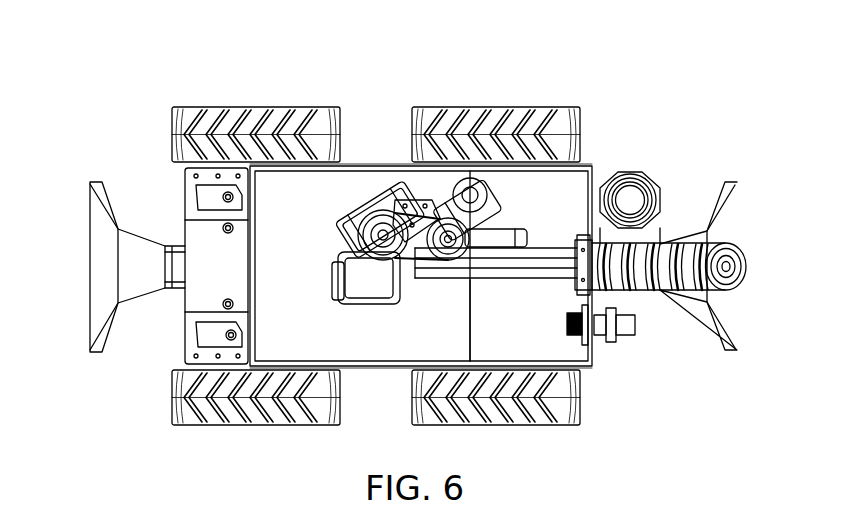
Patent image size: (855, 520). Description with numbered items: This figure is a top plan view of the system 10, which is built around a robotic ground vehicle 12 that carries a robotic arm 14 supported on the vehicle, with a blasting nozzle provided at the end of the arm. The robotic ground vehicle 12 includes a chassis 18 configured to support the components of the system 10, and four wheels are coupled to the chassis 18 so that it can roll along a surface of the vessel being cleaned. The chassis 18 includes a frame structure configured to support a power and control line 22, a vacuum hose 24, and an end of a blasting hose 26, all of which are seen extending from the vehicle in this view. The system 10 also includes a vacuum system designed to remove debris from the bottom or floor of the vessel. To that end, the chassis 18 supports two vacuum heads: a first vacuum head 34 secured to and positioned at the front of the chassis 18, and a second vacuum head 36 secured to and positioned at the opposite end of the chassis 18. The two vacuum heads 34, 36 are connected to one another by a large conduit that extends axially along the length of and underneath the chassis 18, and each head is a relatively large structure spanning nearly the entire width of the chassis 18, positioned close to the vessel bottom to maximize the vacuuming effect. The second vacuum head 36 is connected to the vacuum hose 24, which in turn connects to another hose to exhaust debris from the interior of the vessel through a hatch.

The system 10 is at (123, 93).
The robotic ground vehicle 12 is at (384, 156).
The robotic arm 14 is at (428, 175).
The chassis 18 is at (365, 362).
The power and control line 22 is at (748, 268).
The vacuum hose 24 is at (634, 172).
The blasting hose 26 is at (636, 338).
The first vacuum head 34 is at (98, 302).
The second vacuum head 36 is at (728, 226).